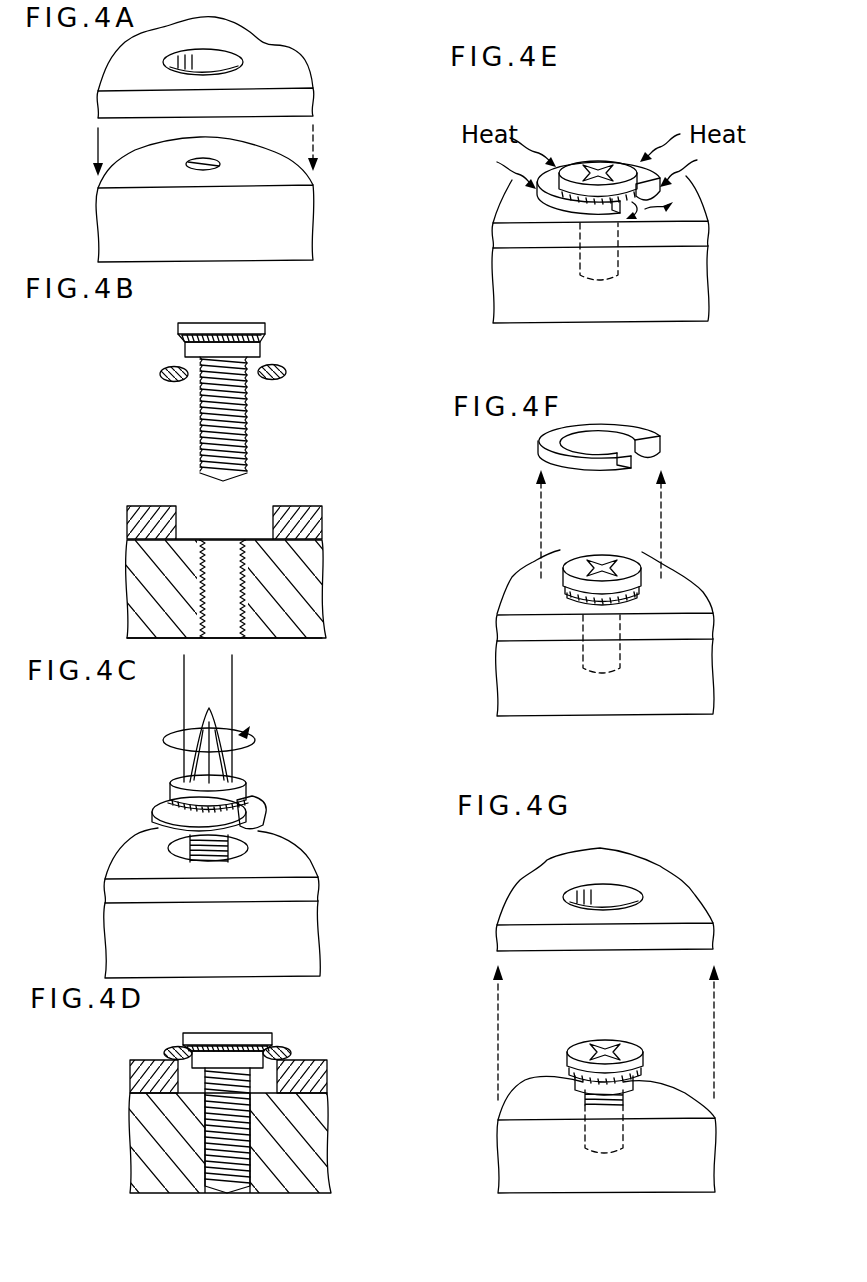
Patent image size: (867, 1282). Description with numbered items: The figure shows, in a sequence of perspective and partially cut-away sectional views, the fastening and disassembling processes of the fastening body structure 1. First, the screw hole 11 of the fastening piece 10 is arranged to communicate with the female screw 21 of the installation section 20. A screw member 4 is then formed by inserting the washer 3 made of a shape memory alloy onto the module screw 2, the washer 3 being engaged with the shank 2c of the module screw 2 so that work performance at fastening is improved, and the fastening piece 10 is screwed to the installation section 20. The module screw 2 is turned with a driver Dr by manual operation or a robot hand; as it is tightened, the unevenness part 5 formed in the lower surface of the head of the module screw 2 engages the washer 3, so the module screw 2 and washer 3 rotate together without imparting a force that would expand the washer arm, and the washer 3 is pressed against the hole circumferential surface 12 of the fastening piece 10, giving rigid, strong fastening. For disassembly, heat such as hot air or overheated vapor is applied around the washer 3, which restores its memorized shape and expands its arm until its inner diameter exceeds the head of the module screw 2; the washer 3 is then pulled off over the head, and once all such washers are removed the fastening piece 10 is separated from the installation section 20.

In FIG. 4C, the fastening body structure 1 is at (144, 759).
In FIG. 4B, the module screw 2 is at (234, 395).
In FIG. 4C, the module screw 2 is at (243, 772).
In FIG. 4D, the module screw 2 is at (250, 1038).
In FIG. 4E, the module screw 2 is at (592, 170).
In FIG. 4F, the module screw 2 is at (600, 558).
In FIG. 4G, the module screw 2 is at (612, 1040).
In FIG. 4B, the shank 2c is at (184, 345).
In FIG. 4B, the washer made of a shape memory alloy 3 is at (249, 362).
In FIG. 4C, the washer made of a shape memory alloy 3 is at (235, 813).
In FIG. 4D, the washer made of a shape memory alloy 3 is at (257, 1043).
In FIG. 4E, the washer made of a shape memory alloy 3 is at (648, 182).
In FIG. 4F, the washer made of a shape memory alloy 3 is at (652, 440).
In FIG. 4B, the screw member 4 is at (252, 394).
In FIG. 4C, the screw member 4 is at (253, 811).
In FIG. 4D, the screw member 4 is at (276, 1091).
In FIG. 4E, the screw member 4 is at (605, 133).
In FIG. 4B, the unevenness part 5 is at (183, 341).
In FIG. 4C, the unevenness part 5 is at (172, 801).
In FIG. 4D, the unevenness part 5 is at (207, 1059).
In FIG. 4E, the unevenness part 5 is at (598, 198).
In FIG. 4F, the unevenness part 5 is at (563, 590).
In FIG. 4G, the unevenness part 5 is at (643, 1069).
In FIG. 4A, the fastening piece 10 is at (234, 63).
In FIG. 4B, the fastening piece 10 is at (261, 491).
In FIG. 4C, the fastening piece 10 is at (237, 844).
In FIG. 4D, the fastening piece 10 is at (322, 1076).
In FIG. 4E, the fastening piece 10 is at (703, 237).
In FIG. 4F, the fastening piece 10 is at (636, 607).
In FIG. 4G, the fastening piece 10 is at (635, 896).
In FIG. 4A, the screw hole 11 is at (210, 58).
In FIG. 4B, the screw hole 11 is at (270, 508).
In FIG. 4C, the screw hole 11 is at (168, 848).
In FIG. 4G, the screw hole 11 is at (605, 892).
In FIG. 4A, the hole circumferential surface 12 is at (255, 57).
In FIG. 4C, the hole circumferential surface 12 is at (262, 845).
In FIG. 4F, the hole circumferential surface 12 is at (650, 590).
In FIG. 4G, the hole circumferential surface 12 is at (648, 890).
In FIG. 4A, the installation section 20 is at (235, 192).
In FIG. 4B, the installation section 20 is at (303, 577).
In FIG. 4C, the installation section 20 is at (305, 945).
In FIG. 4D, the installation section 20 is at (310, 1140).
In FIG. 4E, the installation section 20 is at (695, 292).
In FIG. 4F, the installation section 20 is at (700, 687).
In FIG. 4G, the installation section 20 is at (700, 1162).
In FIG. 4A, the female screw 21 is at (212, 163).
In FIG. 4C, the driver Dr is at (213, 694).